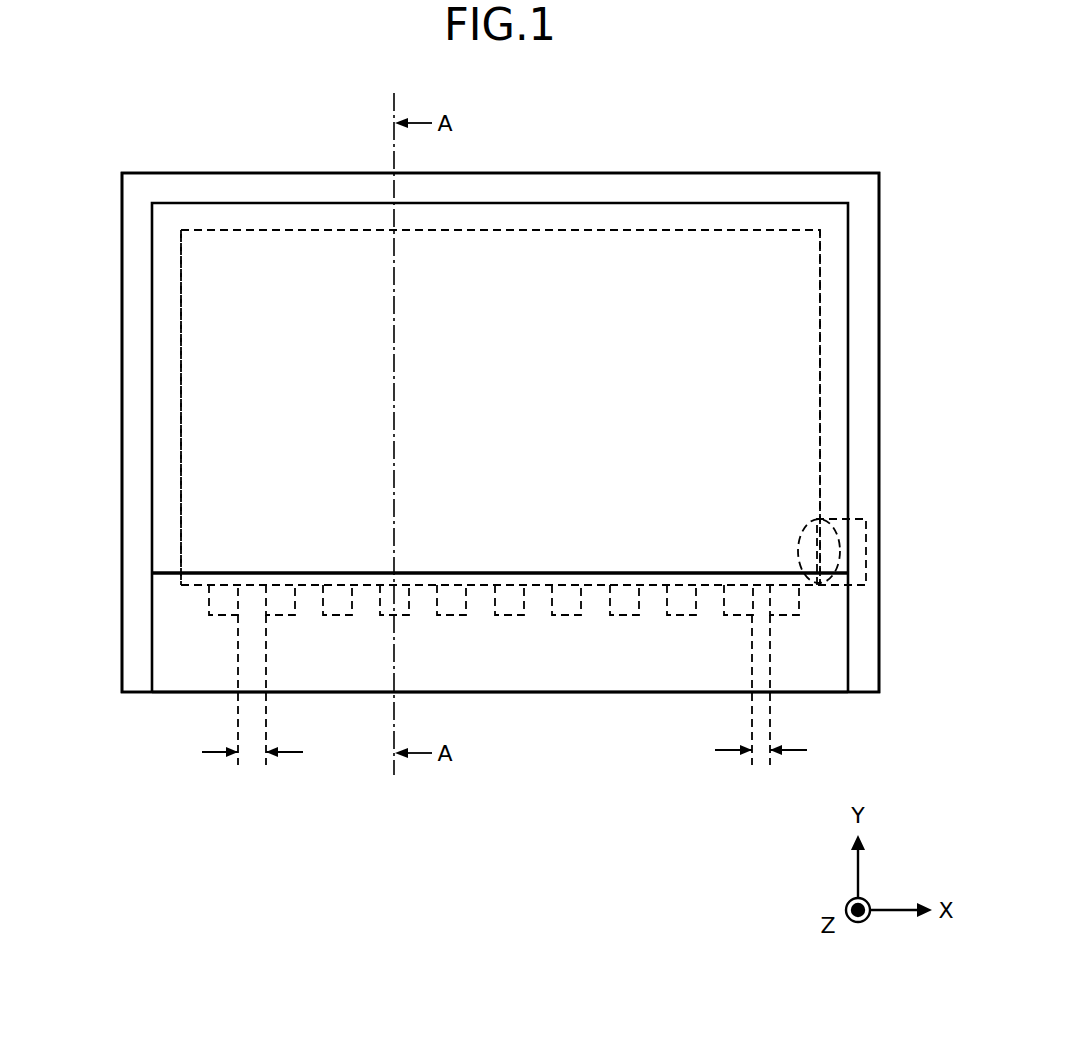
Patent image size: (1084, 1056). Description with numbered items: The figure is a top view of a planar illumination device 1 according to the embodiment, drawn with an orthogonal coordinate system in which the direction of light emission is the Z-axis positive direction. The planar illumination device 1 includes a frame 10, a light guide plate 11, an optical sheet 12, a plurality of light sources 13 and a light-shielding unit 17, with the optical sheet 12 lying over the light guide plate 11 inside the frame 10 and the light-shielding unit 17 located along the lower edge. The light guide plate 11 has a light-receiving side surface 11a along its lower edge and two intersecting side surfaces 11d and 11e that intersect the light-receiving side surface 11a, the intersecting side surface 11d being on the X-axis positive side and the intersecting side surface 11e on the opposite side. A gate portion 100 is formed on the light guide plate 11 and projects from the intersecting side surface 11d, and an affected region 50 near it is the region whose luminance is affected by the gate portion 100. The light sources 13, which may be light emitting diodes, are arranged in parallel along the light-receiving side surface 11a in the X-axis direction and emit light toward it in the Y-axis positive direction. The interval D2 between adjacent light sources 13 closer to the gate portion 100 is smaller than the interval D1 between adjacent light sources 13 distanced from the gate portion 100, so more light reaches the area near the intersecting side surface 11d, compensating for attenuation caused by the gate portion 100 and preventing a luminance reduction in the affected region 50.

The planar illumination device 1 is at (80, 162).
The frame 10 is at (122, 236).
The optical sheet 12 is at (152, 293).
The light guide plate 11 is at (181, 456).
The intersecting side surface 11e is at (181, 378).
The intersecting side surface 11d is at (820, 381).
The light-receiving side surface 11a is at (197, 584).
The light sources 13 is at (209, 598).
The light-shielding unit 17 is at (165, 673).
The affected region 50 is at (808, 552).
The gate portion 100 is at (866, 553).
The interval D1 is at (251, 752).
The interval D2 is at (761, 750).